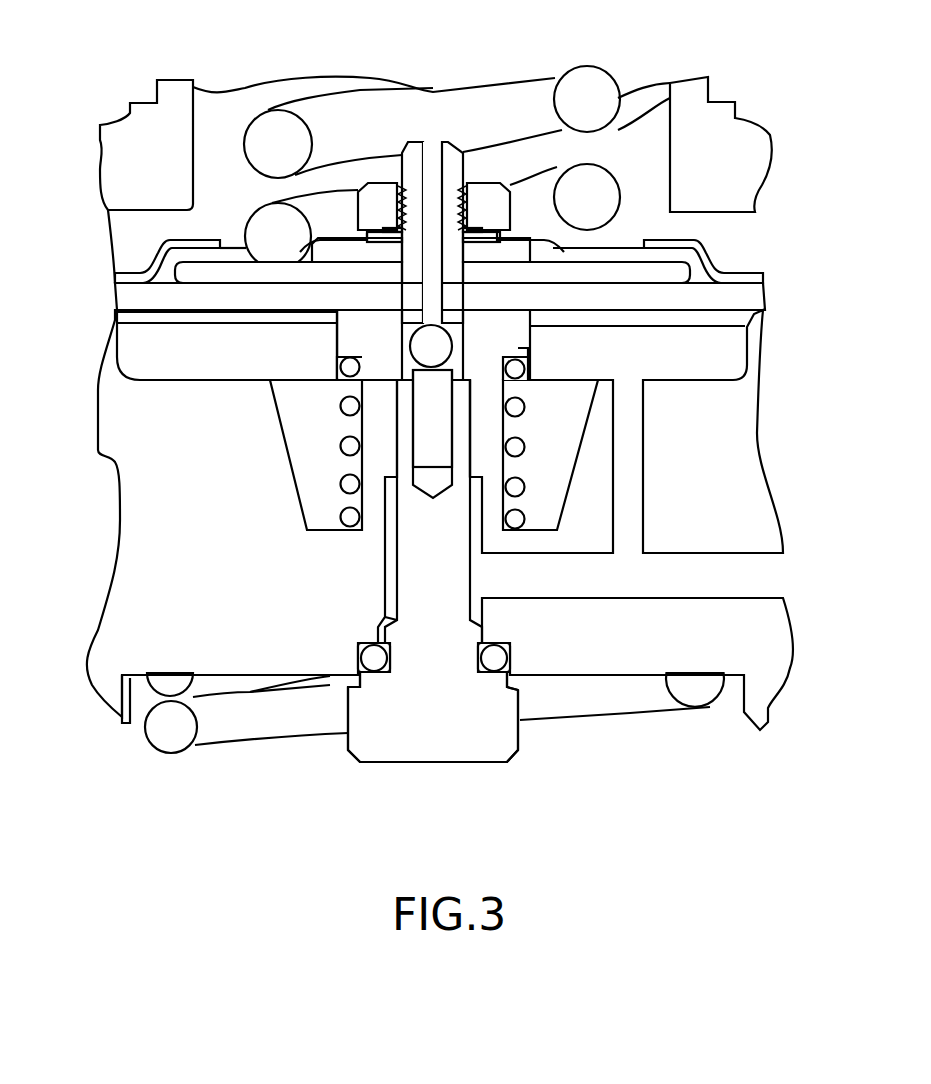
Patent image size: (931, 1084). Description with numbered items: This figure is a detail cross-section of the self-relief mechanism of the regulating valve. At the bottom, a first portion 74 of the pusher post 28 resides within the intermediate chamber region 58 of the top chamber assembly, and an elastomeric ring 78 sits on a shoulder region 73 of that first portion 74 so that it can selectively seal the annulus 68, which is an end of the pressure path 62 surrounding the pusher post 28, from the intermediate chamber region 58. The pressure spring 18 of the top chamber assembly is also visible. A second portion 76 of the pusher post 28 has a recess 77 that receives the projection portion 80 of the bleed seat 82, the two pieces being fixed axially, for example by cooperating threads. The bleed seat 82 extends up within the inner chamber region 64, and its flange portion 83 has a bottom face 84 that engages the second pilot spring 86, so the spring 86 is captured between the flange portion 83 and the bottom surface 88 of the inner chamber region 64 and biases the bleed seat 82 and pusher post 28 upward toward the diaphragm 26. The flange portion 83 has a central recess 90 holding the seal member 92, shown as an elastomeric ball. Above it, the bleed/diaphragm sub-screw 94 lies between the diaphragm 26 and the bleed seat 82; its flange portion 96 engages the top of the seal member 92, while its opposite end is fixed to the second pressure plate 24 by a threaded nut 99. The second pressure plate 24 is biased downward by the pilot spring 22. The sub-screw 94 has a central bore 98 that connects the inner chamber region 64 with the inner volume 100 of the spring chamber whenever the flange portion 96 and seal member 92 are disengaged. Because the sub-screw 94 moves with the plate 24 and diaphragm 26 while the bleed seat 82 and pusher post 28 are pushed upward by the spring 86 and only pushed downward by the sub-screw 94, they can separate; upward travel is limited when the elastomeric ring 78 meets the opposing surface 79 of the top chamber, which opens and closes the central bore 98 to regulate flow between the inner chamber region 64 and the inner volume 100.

The pilot spring 22 is at (594, 78).
The inner volume of the spring chamber 100 is at (652, 110).
The central bore 98 is at (430, 150).
The bleed/diaphragm sub-screw 94 is at (455, 162).
The threaded nut 99 is at (485, 200).
The second pressure plate 24 is at (610, 277).
The diaphragm 26 is at (745, 302).
The flange portion 96 is at (520, 320).
The inner chamber region 64 is at (705, 357).
The seal member 92 is at (427, 343).
The central recess 90 is at (341, 367).
The flange portion 83 is at (518, 348).
The bleed seat 82 is at (425, 391).
The bottom face 84 is at (493, 359).
The projection portion 80 is at (432, 424).
The second portion 76 is at (463, 435).
The annulus 68 is at (390, 530).
The second pilot spring 86 is at (517, 450).
The pressure path 62 is at (645, 468).
The recess 77 is at (437, 482).
The pusher post 28 is at (435, 580).
The bottom surface 88 is at (542, 525).
The intermediate chamber region 58 is at (130, 687).
The pressure spring 18 is at (160, 685).
The opposing surface 79 is at (354, 660).
The elastomeric ring 78 is at (494, 657).
The shoulder region 73 is at (500, 688).
The first portion 74 is at (468, 714).